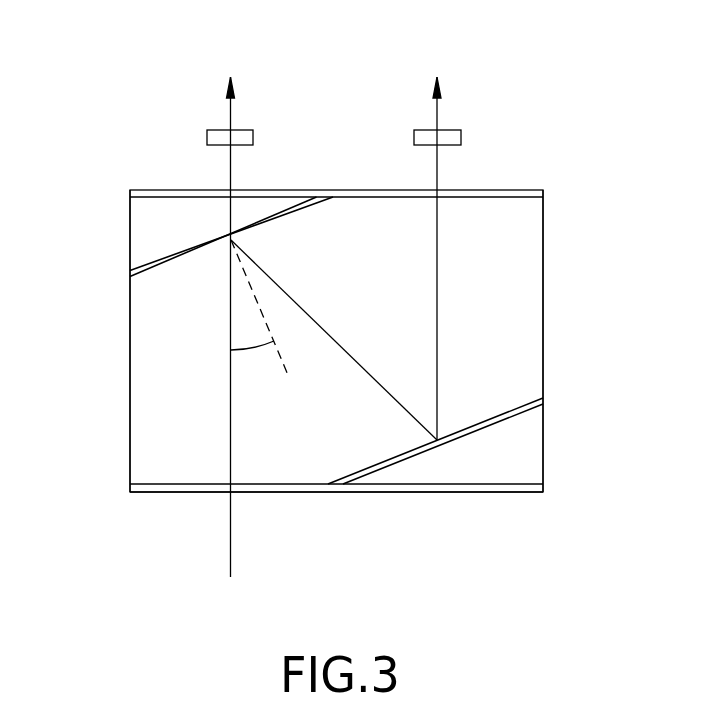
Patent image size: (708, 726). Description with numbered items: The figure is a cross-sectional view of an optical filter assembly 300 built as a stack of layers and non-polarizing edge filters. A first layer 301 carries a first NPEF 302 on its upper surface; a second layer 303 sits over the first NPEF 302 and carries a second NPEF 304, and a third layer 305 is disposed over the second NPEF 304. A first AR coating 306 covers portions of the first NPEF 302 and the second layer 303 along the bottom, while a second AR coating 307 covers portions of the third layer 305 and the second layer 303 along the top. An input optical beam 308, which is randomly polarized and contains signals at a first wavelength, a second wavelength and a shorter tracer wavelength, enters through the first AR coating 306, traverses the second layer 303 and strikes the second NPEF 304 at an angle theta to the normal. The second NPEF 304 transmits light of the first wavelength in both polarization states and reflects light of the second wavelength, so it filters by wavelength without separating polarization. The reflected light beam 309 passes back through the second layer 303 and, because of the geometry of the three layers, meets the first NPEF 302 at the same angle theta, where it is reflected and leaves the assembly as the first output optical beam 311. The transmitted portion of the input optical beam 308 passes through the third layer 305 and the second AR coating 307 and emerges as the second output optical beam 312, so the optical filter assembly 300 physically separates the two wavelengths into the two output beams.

The optical filter assembly 300 is at (604, 43).
The first layer 301 is at (544, 450).
The first NPEF 302 is at (545, 400).
The second layer 303 is at (544, 237).
The second NPEF 304 is at (130, 276).
The third layer 305 is at (130, 237).
The first AR coating 306 is at (200, 490).
The second AR coating 307 is at (150, 188).
The input optical beam 308 is at (231, 537).
The light beam 309 is at (385, 390).
The first output optical beam 311 is at (437, 168).
The second output optical beam 312 is at (231, 167).